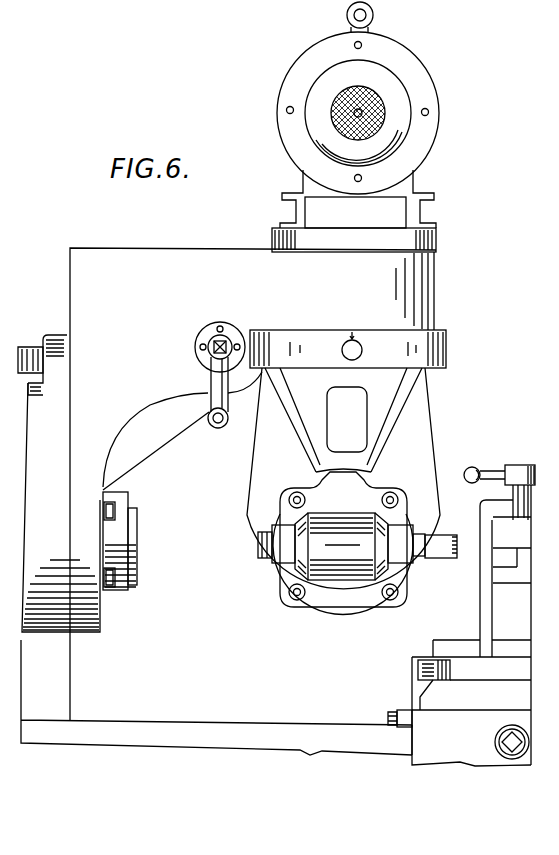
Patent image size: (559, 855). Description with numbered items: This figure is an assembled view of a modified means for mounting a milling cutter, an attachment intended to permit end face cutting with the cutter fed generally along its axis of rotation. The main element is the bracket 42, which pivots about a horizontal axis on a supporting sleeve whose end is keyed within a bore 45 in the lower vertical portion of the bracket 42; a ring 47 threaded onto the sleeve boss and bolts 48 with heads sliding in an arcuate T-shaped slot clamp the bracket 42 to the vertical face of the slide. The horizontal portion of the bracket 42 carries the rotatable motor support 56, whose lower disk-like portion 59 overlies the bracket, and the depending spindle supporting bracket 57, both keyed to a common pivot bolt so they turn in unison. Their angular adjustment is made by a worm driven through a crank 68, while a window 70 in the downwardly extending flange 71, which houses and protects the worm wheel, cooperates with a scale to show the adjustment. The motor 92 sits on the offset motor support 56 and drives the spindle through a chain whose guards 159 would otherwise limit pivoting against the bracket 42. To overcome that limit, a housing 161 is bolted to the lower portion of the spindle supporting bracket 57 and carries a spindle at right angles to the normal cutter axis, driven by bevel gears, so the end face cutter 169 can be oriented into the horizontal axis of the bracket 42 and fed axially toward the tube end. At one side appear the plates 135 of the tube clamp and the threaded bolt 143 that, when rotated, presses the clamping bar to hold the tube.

The bracket 42 is at (152, 264).
The bore 45 is at (28, 445).
The ring 47 is at (122, 504).
The bolts 48 is at (113, 582).
The motor support 56 is at (425, 214).
The spindle supporting bracket 57 is at (424, 401).
The lower disk-like portion 59 is at (420, 244).
The crank 68 is at (217, 386).
The window 70 is at (364, 354).
The downwardly extending flange 71 is at (447, 353).
The motor 92 is at (425, 82).
The plates 135 is at (488, 611).
The threaded bolt 143 is at (519, 465).
The guards 159 is at (262, 470).
The housing 161 is at (322, 556).
The end face cutter 169 is at (450, 538).